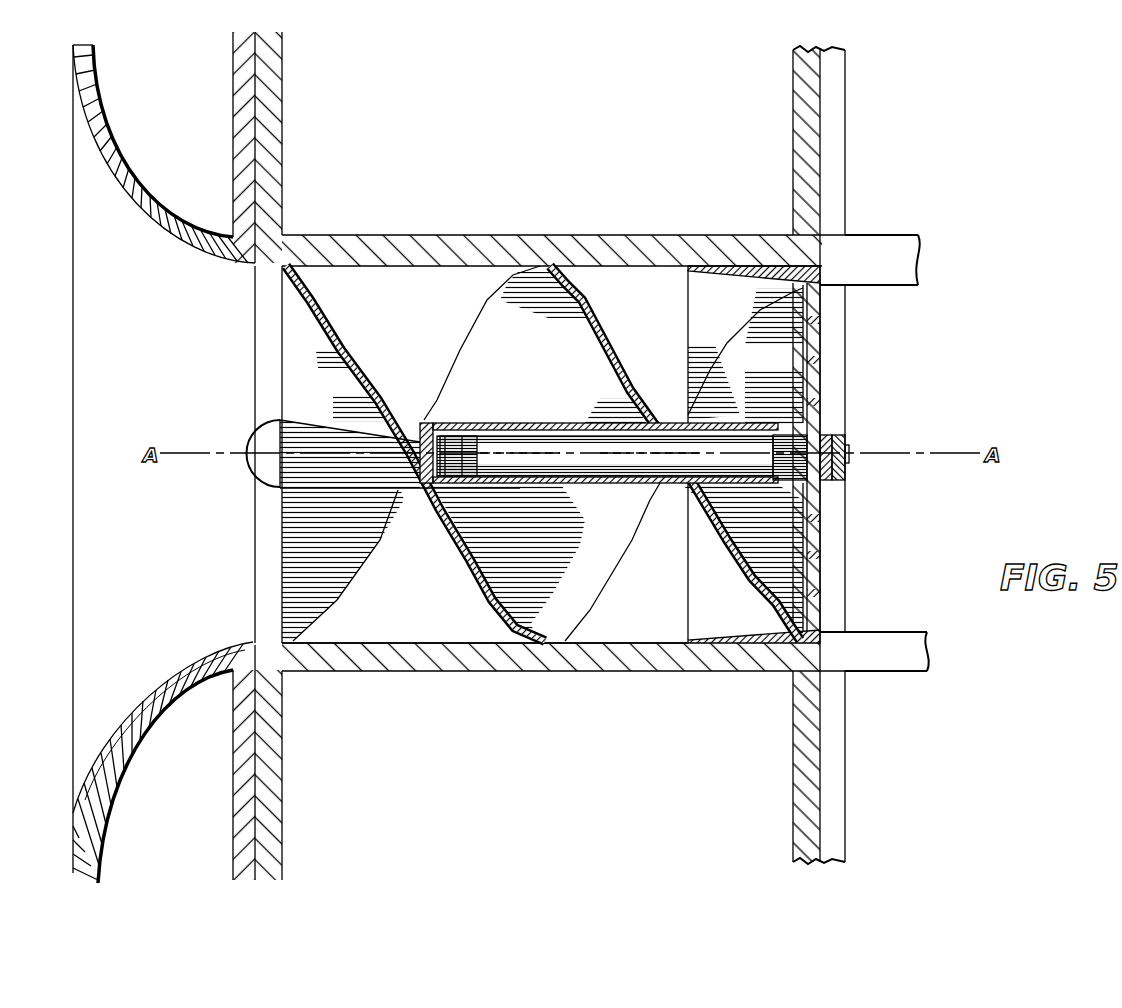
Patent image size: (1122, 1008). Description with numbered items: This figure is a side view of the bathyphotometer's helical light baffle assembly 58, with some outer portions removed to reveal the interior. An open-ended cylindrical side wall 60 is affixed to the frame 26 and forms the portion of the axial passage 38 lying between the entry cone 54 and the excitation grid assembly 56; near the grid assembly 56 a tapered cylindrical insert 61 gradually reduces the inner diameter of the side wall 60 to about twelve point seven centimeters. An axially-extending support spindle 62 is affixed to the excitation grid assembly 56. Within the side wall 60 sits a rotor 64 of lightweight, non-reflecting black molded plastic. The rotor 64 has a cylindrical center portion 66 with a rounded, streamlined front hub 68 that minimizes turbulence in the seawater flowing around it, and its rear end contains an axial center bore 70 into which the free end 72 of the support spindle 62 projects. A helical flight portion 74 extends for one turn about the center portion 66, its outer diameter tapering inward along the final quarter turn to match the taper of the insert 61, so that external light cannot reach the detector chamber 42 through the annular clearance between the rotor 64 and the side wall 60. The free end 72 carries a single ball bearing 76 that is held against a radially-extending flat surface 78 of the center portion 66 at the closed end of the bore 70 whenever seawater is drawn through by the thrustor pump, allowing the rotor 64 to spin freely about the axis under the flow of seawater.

The frame 26 is at (793, 126).
The axial passage 38 is at (407, 628).
The detector chamber 42 is at (895, 318).
The entry cone 54 is at (176, 243).
The excitation grid assembly 56 is at (826, 557).
The helical light baffle assembly 58 is at (484, 148).
The cylindrical side wall 60 is at (640, 667).
The tapered cylindrical insert 61 is at (758, 647).
The support spindle 62 is at (810, 430).
The rotor 64 is at (268, 568).
The cylindrical center portion 66 is at (627, 488).
The front hub 68 is at (248, 468).
The axial center bore 70 is at (660, 408).
The free end of the support spindle 72 is at (468, 425).
The helical flight portion 74 is at (606, 336).
The ball bearing 76 is at (420, 498).
The radially-extending flat surface 78 is at (424, 420).